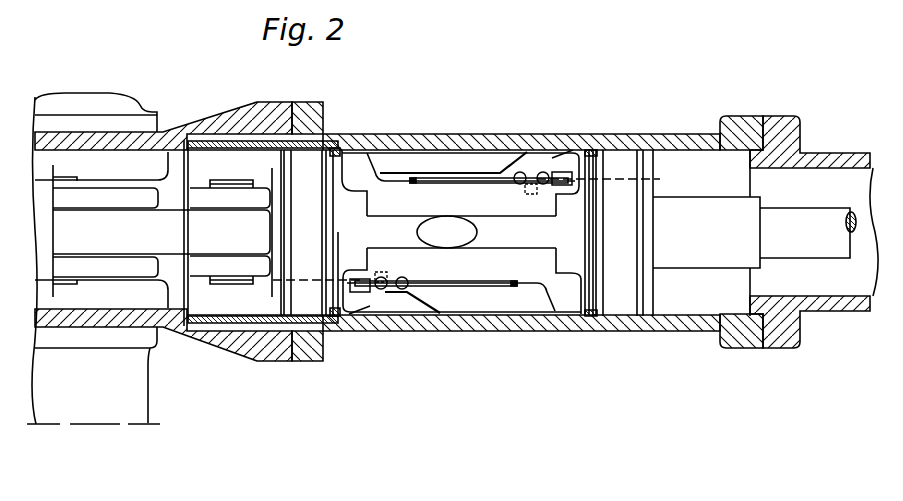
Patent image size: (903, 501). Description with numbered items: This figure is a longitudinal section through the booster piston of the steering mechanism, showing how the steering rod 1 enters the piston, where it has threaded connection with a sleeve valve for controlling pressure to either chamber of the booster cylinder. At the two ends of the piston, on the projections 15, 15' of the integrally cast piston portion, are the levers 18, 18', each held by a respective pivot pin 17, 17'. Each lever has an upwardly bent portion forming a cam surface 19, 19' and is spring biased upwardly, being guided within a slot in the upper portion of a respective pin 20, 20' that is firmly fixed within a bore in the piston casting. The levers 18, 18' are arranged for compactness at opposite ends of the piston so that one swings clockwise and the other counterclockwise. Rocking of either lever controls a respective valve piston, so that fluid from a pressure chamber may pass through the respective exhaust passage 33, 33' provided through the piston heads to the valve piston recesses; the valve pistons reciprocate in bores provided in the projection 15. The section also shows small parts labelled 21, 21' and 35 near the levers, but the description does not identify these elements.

The steering rod 1 is at (793, 243).
The projection 15 is at (470, 311).
The projection 15' is at (632, 168).
The pivot pin 17 is at (462, 319).
The pivot pin 17' is at (460, 153).
The lever 18 is at (436, 269).
The lever 18' is at (489, 143).
The cam surface 19 is at (343, 336).
The cam surface 19' is at (590, 138).
The pin 20 is at (423, 323).
The pin 20' is at (526, 143).
The ball 21 is at (369, 323).
The ball 21' is at (558, 133).
The exhaust passage 33 is at (316, 263).
The exhaust passage 33' is at (616, 170).
The pin 35 is at (529, 194).